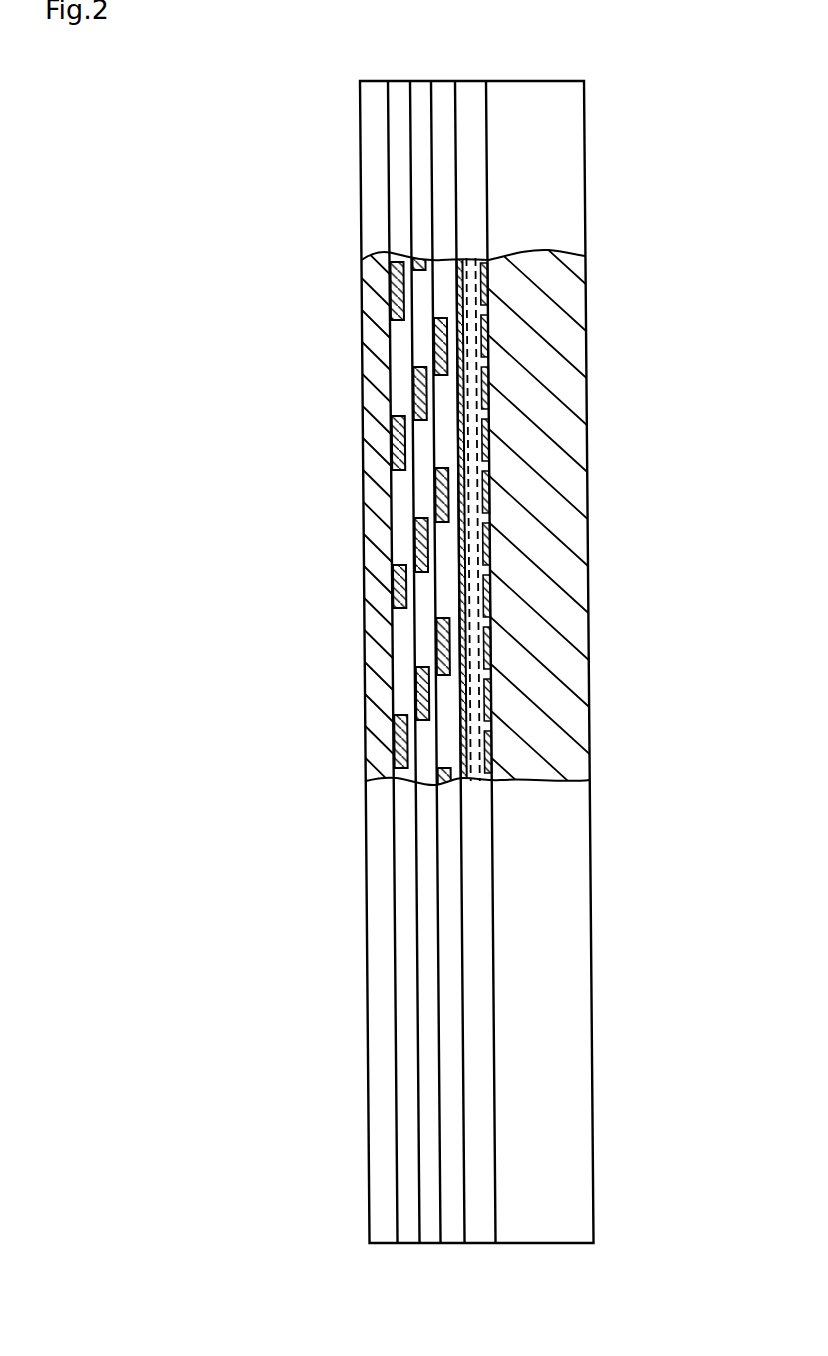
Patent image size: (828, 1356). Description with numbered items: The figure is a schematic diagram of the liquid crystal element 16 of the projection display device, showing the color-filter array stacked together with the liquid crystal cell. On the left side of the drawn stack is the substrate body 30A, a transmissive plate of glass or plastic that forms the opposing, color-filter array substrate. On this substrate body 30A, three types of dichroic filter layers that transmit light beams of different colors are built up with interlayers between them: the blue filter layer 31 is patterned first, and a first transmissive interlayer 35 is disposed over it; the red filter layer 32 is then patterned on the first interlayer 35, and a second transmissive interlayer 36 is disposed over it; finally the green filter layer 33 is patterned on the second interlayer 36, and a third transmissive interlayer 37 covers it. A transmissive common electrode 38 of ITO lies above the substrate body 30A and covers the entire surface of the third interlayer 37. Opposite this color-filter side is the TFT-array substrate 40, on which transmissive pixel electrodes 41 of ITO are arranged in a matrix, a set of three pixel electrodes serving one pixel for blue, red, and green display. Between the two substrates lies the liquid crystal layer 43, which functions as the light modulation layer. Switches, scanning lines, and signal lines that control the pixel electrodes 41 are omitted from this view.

The liquid crystal element 16 is at (608, 143).
The substrate body 30A is at (362, 293).
The blue filter layer 31 is at (392, 435).
The red filter layer 32 is at (414, 395).
The green filter layer 33 is at (435, 337).
The first transmissive interlayer 35 is at (403, 699).
The second transmissive interlayer 36 is at (423, 658).
The third transmissive interlayer 37 is at (440, 608).
The transmissive common electrode 38 is at (487, 468).
The TFT-array substrate 40 is at (575, 318).
The pixel electrodes 41 is at (487, 405).
The liquid crystal layer 43 is at (490, 572).